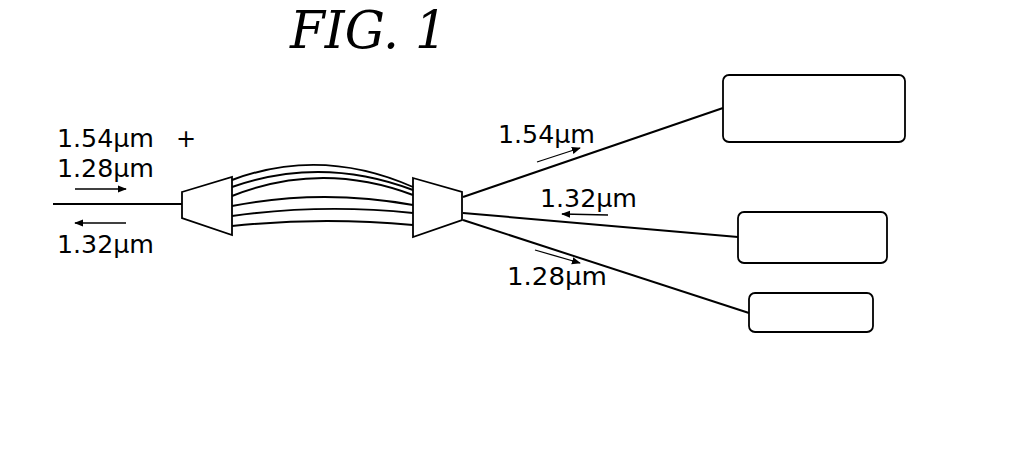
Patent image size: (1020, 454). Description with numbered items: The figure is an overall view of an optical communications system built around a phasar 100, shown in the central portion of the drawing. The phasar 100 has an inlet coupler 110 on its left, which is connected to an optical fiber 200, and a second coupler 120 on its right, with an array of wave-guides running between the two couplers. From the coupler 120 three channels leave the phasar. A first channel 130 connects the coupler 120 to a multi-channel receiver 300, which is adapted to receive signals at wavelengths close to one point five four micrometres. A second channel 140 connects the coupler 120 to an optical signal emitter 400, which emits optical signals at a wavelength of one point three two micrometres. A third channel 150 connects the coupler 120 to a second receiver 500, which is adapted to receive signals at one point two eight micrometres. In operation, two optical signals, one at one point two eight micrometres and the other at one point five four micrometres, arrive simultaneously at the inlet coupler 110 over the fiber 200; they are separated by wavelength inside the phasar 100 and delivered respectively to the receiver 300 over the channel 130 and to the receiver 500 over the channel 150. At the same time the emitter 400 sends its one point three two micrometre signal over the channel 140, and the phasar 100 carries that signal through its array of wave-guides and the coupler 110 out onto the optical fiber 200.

The phasar 100 is at (335, 235).
The inlet coupler 110 is at (218, 183).
The second coupler 120 is at (428, 190).
The first channel 130 is at (655, 128).
The second channel 140 is at (687, 232).
The third channel 150 is at (673, 290).
The optical fiber 200 is at (170, 206).
The multi-channel receiver 300 is at (808, 86).
The optical signal emitter 400 is at (807, 220).
The second receiver 500 is at (803, 325).